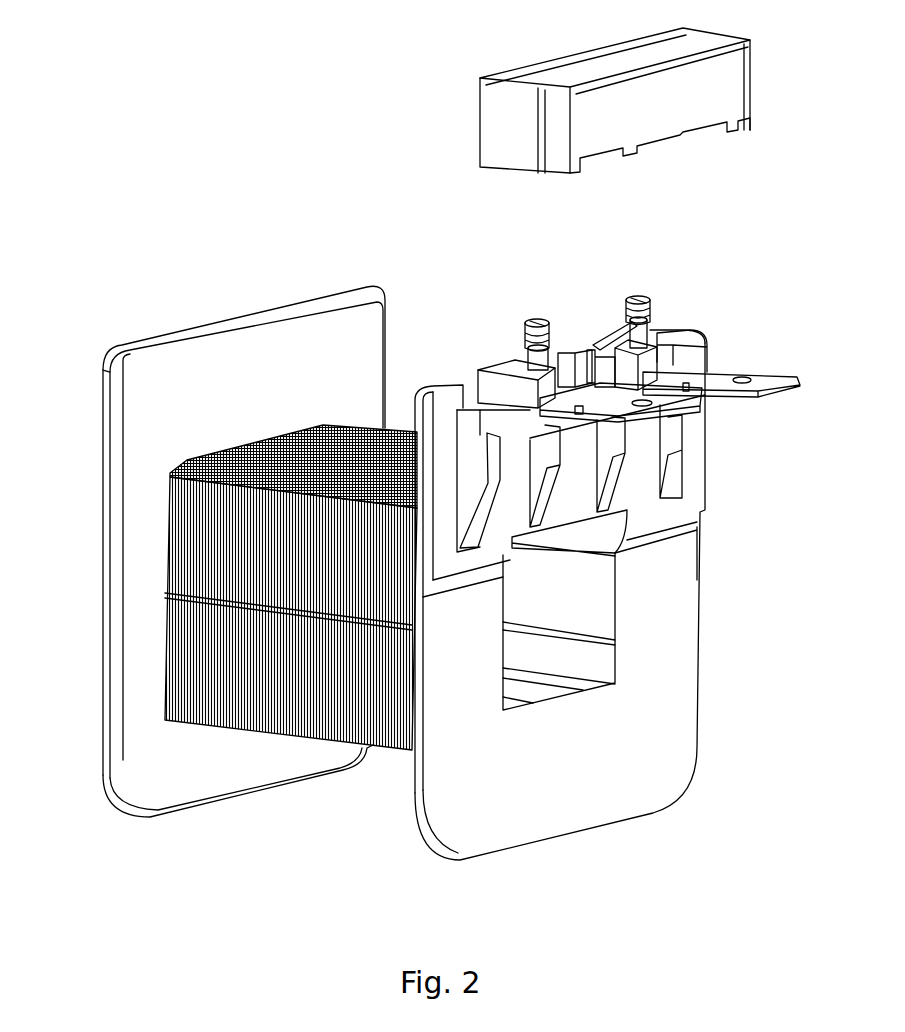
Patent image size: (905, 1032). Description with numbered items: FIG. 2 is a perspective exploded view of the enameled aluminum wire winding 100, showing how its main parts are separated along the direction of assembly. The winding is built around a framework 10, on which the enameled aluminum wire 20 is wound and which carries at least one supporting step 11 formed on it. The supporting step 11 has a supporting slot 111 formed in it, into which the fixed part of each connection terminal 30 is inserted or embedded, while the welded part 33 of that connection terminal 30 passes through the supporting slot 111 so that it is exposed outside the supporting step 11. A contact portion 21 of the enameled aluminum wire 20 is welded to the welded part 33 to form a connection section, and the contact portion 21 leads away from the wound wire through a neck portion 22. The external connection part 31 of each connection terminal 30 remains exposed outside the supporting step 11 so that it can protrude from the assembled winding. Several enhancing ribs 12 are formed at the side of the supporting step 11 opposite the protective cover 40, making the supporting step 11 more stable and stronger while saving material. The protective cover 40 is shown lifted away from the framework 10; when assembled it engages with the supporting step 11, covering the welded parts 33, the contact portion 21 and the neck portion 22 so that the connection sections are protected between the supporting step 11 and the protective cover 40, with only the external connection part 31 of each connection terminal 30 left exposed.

The enameled aluminum wire winding 100 is at (98, 55).
The framework 10 is at (163, 427).
The supporting step 11 is at (505, 383).
The supporting slot 111 is at (567, 380).
The enhancing ribs 12 is at (613, 473).
The enameled aluminum wire 20 is at (197, 547).
The contact portion 21 is at (523, 335).
The neck portion 22 is at (620, 327).
The connection terminal 30 is at (708, 362).
The external connection part 31 is at (707, 372).
The welded part 33 is at (540, 323).
The protective cover 40 is at (705, 103).